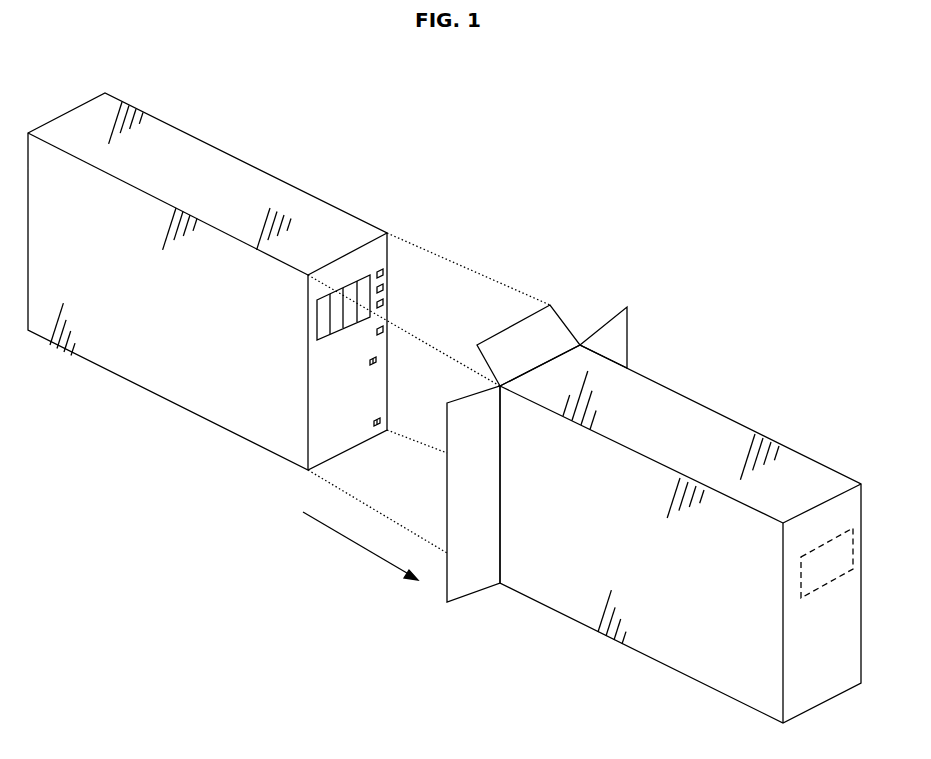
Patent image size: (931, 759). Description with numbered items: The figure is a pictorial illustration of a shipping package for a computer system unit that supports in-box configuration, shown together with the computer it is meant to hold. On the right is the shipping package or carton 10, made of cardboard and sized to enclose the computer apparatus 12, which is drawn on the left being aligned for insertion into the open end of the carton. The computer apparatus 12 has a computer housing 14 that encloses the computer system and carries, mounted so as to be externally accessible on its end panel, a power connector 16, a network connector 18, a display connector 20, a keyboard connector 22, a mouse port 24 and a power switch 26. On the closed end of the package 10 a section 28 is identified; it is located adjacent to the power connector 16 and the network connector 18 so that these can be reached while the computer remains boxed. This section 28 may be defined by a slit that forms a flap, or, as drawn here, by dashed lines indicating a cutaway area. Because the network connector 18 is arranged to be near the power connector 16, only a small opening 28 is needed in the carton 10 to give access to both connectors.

The shipping package 10 is at (690, 398).
The computer apparatus 12 is at (108, 427).
The computer housing 14 is at (218, 145).
The power connector 16 is at (363, 363).
The network connector 18 is at (387, 327).
The display connector 20 is at (385, 273).
The keyboard connector 22 is at (385, 302).
The mouse port 24 is at (385, 288).
The power switch 26 is at (388, 419).
The section of the package 28 is at (835, 585).